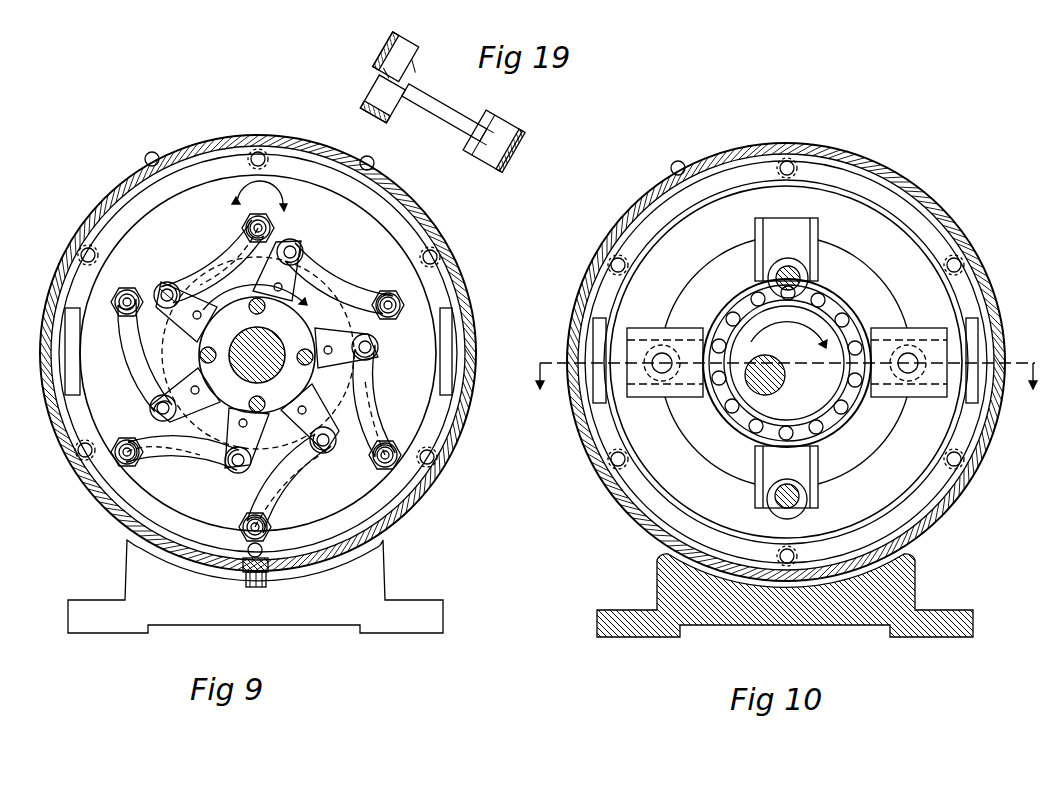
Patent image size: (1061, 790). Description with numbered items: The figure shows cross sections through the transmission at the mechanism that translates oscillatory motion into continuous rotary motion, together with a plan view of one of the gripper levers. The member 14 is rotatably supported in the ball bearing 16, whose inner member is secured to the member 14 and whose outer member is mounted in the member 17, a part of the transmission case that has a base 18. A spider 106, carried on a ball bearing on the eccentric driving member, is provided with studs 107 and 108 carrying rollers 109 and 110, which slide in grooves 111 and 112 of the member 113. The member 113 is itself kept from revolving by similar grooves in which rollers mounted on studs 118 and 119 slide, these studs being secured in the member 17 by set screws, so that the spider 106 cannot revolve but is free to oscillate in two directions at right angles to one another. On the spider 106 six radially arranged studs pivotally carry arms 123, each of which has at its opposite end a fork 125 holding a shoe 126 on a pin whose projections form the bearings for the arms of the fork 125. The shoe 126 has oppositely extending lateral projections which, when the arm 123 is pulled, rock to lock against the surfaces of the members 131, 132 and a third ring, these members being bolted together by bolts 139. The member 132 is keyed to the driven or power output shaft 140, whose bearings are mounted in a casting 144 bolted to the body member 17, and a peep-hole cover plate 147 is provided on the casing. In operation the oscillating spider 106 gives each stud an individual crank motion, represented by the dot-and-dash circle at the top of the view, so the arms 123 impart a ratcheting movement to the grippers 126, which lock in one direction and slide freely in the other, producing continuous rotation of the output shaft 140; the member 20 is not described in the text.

In FIG. 10, the member 14 is at (783, 365).
In FIG. 10, the ball bearing 16 is at (850, 420).
In FIG. 9, the member 17 is at (145, 232).
In FIG. 10, the member 17 is at (683, 232).
In FIG. 9, the base 18 is at (255, 586).
In FIG. 10, the base 18 is at (908, 592).
In FIG. 10, the inner bearing race 20 is at (750, 380).
In FIG. 9, the spider 106 is at (146, 426).
In FIG. 10, the stud 107 is at (775, 497).
In FIG. 10, the stud 108 is at (768, 280).
In FIG. 10, the roller 109 is at (790, 512).
In FIG. 10, the roller 110 is at (796, 270).
In FIG. 10, the groove 111 is at (786, 249).
In FIG. 10, the groove 112 is at (786, 476).
In FIG. 10, the member 113 is at (863, 279).
In FIG. 10, the stud 118 is at (910, 350).
In FIG. 10, the stud 119 is at (658, 350).
In FIG. 9, the arm 123 is at (202, 258).
In FIG. 19, the arm 123 is at (447, 112).
In FIG. 19, the fork 125 is at (378, 82).
In FIG. 9, the shoe 126 is at (163, 292).
In FIG. 9, the member 131 is at (396, 321).
In FIG. 9, the member 132 is at (257, 349).
In FIG. 9, the bolt 139 is at (208, 350).
In FIG. 9, the driven or power output shaft 140 is at (278, 358).
In FIG. 9, the casting 144 is at (68, 258).
In FIG. 10, the casting 144 is at (940, 204).
In FIG. 9, the peep-hole cover plate 147 is at (234, 140).
In FIG. 10, the peep-hole cover plate 147 is at (790, 144).